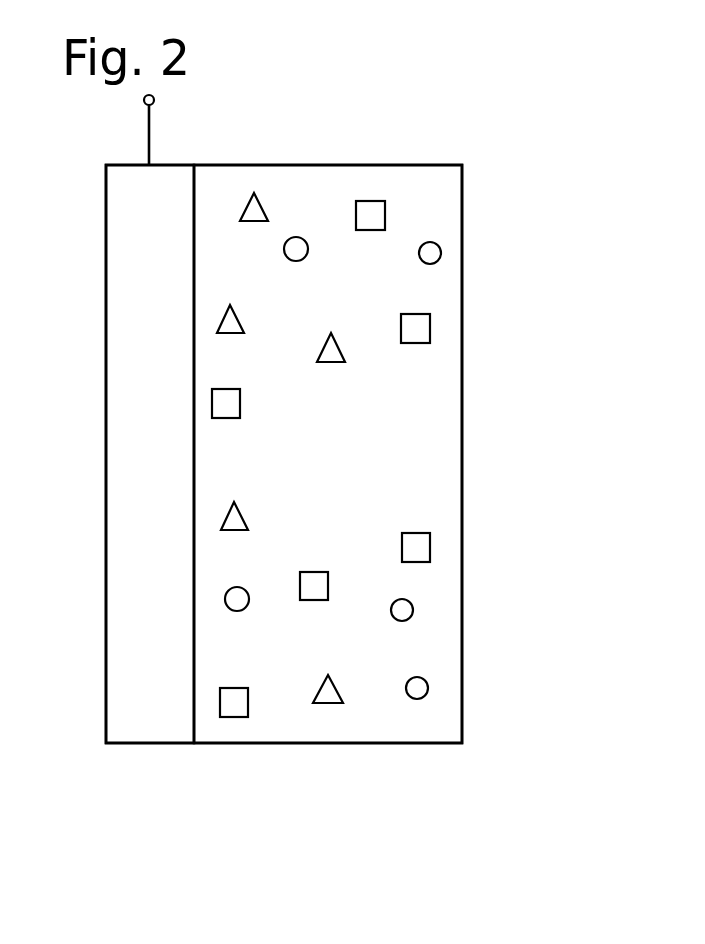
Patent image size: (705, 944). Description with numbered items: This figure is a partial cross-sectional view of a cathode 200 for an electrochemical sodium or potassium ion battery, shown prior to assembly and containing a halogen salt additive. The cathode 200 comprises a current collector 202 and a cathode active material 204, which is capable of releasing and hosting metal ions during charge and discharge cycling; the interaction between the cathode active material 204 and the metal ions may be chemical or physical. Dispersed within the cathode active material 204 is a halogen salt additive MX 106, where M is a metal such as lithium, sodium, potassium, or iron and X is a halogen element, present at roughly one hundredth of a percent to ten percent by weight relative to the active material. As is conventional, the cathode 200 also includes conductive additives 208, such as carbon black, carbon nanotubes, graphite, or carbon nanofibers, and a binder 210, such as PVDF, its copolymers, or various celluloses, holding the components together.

The cathode 200 is at (478, 127).
The current collector 202 is at (142, 692).
The cathode active material 204 is at (328, 454).
The halogen salt additive (MX) 106 is at (420, 543).
The conductive additive 208 is at (422, 687).
The binder 210 is at (327, 692).